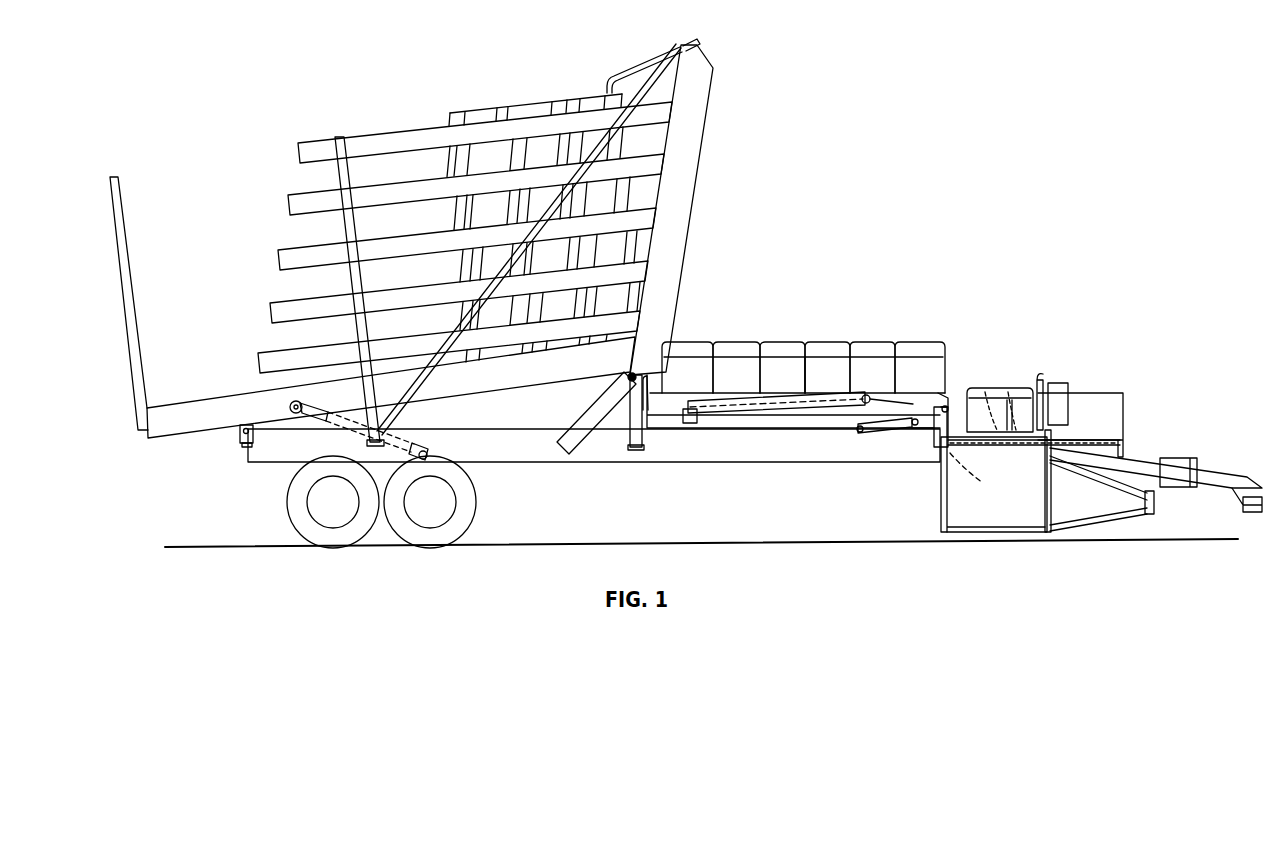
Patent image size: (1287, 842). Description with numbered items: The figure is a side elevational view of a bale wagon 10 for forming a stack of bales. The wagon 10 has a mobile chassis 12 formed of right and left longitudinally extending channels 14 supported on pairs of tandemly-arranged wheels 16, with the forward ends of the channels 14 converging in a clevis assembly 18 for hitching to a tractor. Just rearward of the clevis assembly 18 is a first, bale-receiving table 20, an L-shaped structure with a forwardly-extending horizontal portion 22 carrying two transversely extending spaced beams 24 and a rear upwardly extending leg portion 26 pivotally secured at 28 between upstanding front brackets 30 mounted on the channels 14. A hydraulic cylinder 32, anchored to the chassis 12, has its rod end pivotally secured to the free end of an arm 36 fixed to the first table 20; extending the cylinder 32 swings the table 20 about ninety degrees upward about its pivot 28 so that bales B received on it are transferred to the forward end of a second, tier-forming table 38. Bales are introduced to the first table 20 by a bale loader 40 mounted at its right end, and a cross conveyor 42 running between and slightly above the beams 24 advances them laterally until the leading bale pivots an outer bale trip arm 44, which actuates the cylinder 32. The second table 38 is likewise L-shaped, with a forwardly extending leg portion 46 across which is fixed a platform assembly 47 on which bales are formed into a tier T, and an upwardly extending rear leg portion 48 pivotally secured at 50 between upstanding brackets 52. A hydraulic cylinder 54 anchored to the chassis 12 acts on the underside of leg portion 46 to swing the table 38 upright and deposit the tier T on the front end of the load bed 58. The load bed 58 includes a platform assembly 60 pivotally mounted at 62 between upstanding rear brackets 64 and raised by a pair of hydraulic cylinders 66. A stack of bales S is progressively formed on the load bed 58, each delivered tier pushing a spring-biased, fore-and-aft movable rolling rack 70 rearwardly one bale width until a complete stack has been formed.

The bale wagon 10 is at (778, 188).
The mobile chassis 12 is at (581, 462).
The longitudinally extending channels 14 is at (758, 466).
The wheels 16 is at (378, 540).
The clevis assembly 18 is at (1147, 458).
The first bale-receiving table 20 is at (1030, 447).
The forwardly-extending horizontal portion 22 is at (950, 455).
The transversely extending spaced beams 24 is at (1031, 447).
The rear upwardly extending leg portion 26 is at (935, 452).
The pivot point 28 is at (948, 405).
The front brackets 30 is at (940, 395).
The hydraulic cylinder 32 is at (913, 435).
The arm 36 is at (914, 445).
The second tier-forming table 38 is at (889, 412).
The bale loader 40 is at (1110, 524).
The cross conveyor 42 is at (985, 392).
The outer bale trip arm 44 is at (1037, 377).
The forwardly extending leg portion 46 is at (728, 415).
The platform assembly 47 is at (810, 390).
The upwardly extending rear leg portion 48 is at (650, 393).
The pivot point 50 is at (627, 379).
The upstanding brackets 52 is at (645, 450).
The hydraulic cylinder 54 is at (807, 421).
The load bed 58 is at (159, 438).
The platform assembly 60 is at (228, 395).
The pivot 62 is at (240, 432).
The rear brackets 64 is at (250, 447).
The hydraulic cylinders 66 is at (396, 427).
The rolling rack 70 is at (458, 266).
The stack of bales S is at (532, 104).
The tier T is at (781, 347).
The bales B is at (1003, 389).